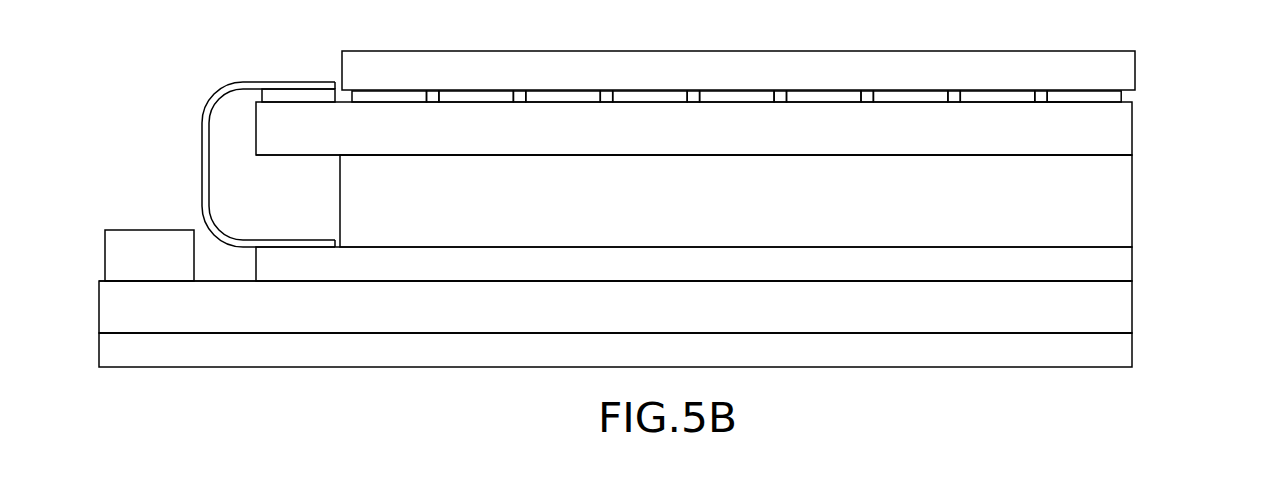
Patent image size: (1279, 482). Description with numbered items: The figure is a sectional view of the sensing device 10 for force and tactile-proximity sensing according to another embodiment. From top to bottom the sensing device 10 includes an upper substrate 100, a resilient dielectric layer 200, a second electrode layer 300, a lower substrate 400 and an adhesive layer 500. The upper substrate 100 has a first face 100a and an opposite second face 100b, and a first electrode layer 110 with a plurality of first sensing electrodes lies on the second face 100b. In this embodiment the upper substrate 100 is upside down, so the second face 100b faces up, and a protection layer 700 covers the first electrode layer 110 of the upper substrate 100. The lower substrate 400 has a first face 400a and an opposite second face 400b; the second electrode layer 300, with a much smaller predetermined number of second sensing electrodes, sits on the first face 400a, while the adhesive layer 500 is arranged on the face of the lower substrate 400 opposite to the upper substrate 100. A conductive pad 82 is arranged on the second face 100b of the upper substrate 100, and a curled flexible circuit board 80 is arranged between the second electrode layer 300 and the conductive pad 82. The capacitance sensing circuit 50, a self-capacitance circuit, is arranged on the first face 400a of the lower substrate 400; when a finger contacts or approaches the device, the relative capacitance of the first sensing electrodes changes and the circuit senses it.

The sensing device 10 is at (628, 43).
The capacitance sensing circuit 50 is at (148, 230).
The flexible circuit board 80 is at (203, 150).
The conductive pad 82 is at (275, 93).
The upper substrate 100 is at (1123, 127).
The first face of upper substrate 100a is at (1090, 155).
The second face of upper substrate 100b is at (1040, 91).
The first electrode layer 110 is at (1115, 96).
The resilient dielectric layer 200 is at (1122, 202).
The second electrode layer 300 is at (1123, 263).
The lower substrate 400 is at (1122, 306).
The first face of lower substrate 400a is at (1108, 281).
The second face of lower substrate 400b is at (1108, 333).
The adhesive layer 500 is at (1122, 350).
The protection layer 700 is at (738, 63).